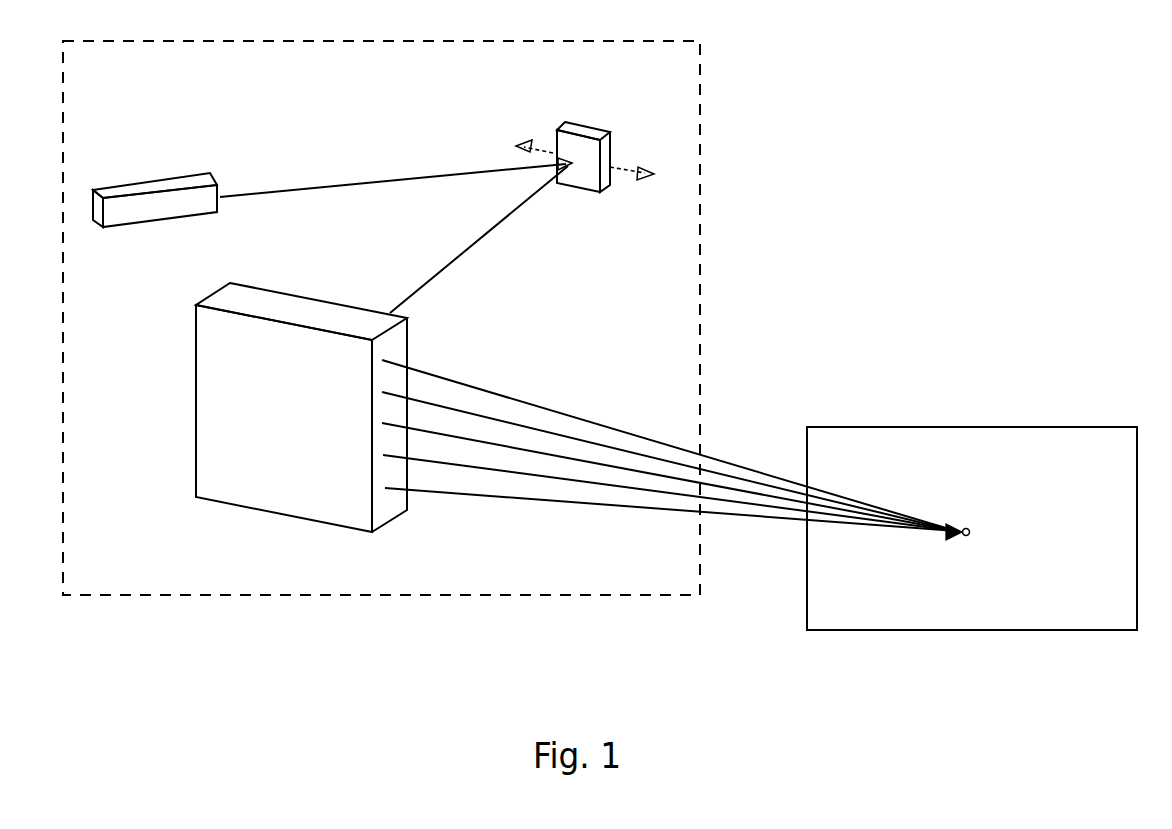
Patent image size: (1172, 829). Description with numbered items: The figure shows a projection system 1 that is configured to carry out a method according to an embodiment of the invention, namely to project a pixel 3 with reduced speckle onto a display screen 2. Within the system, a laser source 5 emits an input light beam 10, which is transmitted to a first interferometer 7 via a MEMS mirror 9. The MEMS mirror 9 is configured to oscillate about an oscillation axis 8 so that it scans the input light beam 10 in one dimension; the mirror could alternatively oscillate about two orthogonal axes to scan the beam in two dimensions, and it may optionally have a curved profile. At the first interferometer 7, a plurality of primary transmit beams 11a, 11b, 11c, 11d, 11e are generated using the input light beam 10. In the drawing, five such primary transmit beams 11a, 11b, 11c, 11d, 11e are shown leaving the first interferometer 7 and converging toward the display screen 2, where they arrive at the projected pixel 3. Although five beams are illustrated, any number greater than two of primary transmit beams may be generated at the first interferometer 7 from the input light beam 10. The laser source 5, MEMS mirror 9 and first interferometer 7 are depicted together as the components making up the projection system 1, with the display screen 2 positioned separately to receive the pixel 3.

The projection system 1 is at (700, 107).
The display screen 2 is at (913, 427).
The pixel 3 is at (963, 540).
The laser source 5 is at (167, 180).
The first interferometer 7 is at (196, 448).
The oscillation axis 8 is at (628, 172).
The MEMS mirror 9 is at (597, 128).
The input light beam 10 is at (333, 183).
The primary transmit beam 11a is at (425, 370).
The primary transmit beam 11b is at (453, 407).
The primary transmit beam 11c is at (475, 438).
The primary transmit beam 11d is at (522, 472).
The primary transmit beam 11e is at (582, 503).